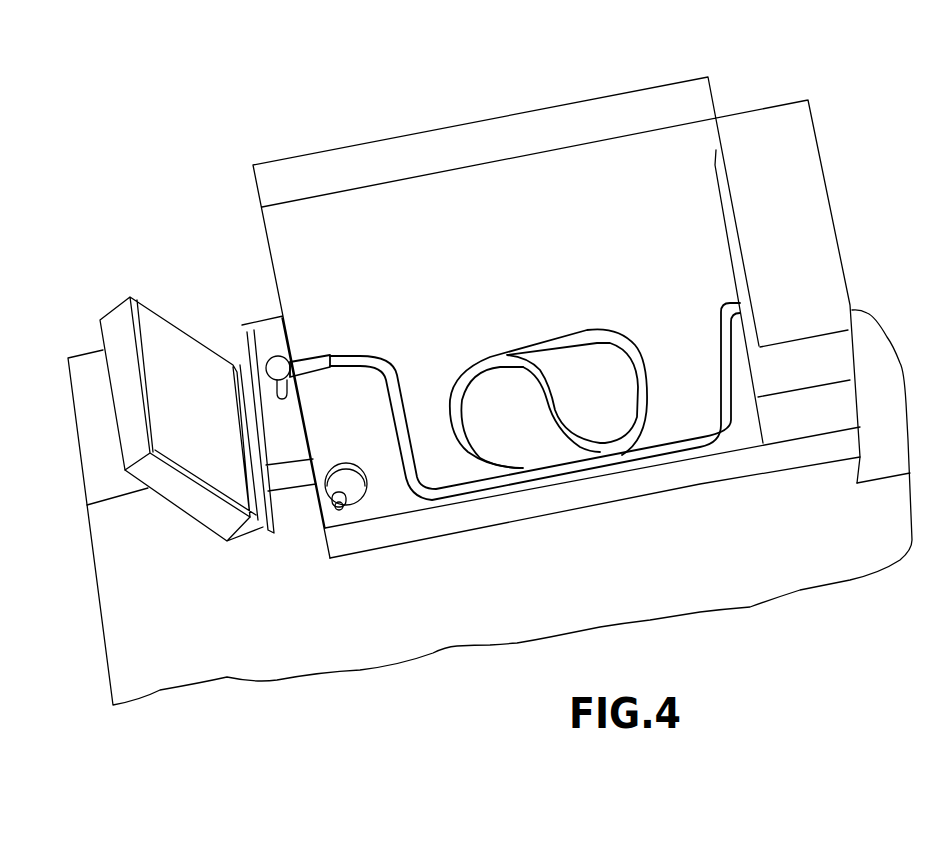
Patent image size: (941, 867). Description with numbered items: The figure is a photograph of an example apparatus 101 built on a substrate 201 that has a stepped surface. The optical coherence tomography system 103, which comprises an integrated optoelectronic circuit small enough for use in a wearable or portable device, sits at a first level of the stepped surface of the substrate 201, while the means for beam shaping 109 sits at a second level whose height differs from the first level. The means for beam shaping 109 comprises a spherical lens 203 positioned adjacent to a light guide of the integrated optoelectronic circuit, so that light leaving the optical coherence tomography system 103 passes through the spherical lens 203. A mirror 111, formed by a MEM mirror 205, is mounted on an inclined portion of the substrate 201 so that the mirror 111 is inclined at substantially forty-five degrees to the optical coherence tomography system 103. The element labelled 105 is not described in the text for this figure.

The apparatus 101 is at (688, 122).
The optical coherence tomography system 103 is at (750, 437).
The door 105 is at (161, 286).
The means for beam shaping 109 is at (283, 401).
The mirror 111 is at (224, 500).
The substrate 201 is at (553, 498).
The spherical lens 203 is at (268, 360).
The MEM mirror 205 is at (152, 449).